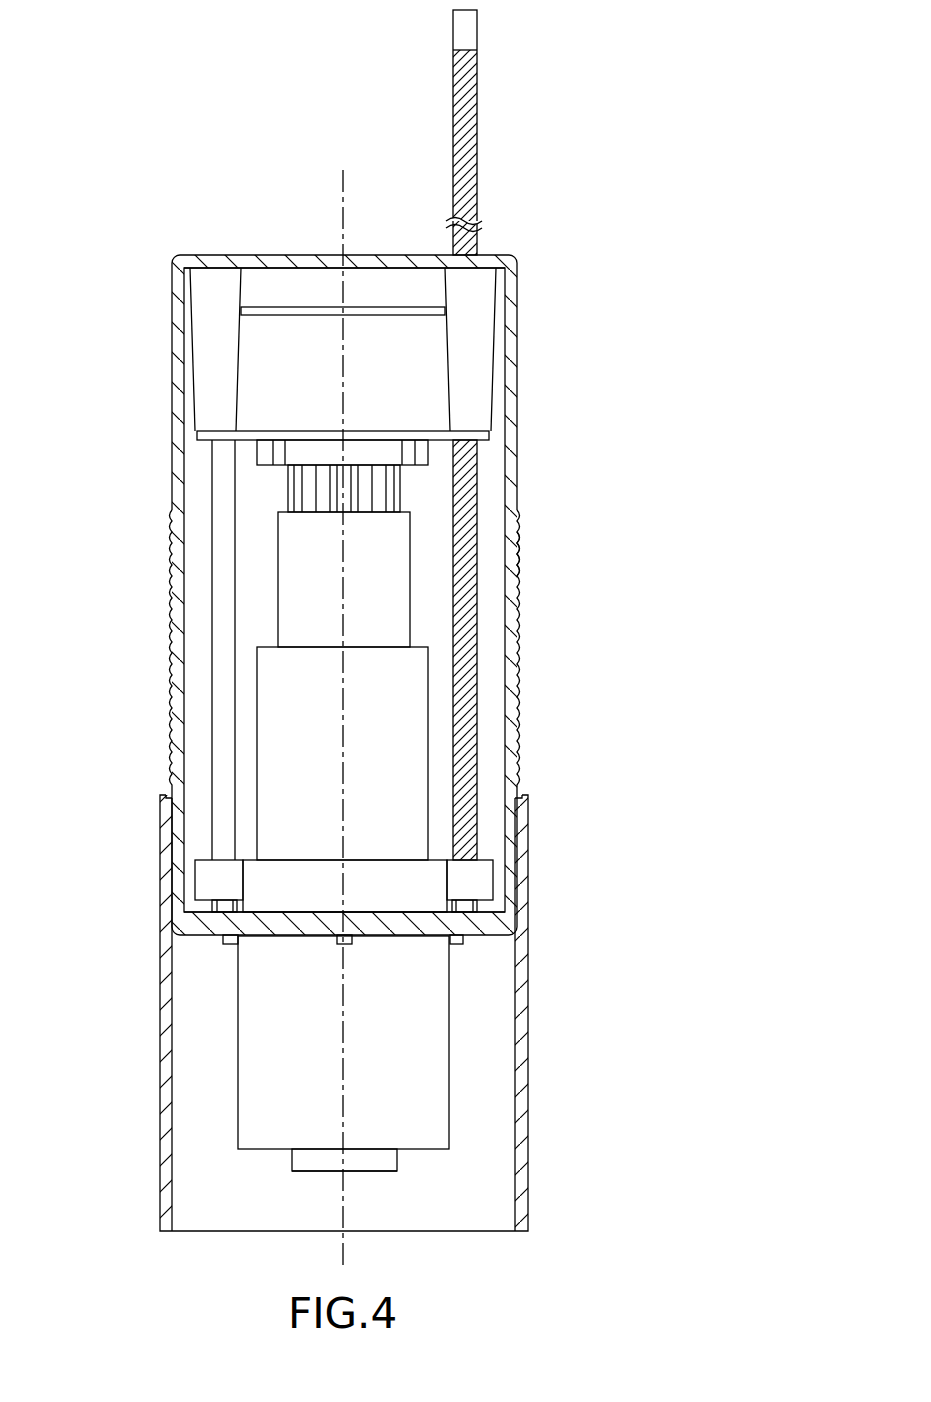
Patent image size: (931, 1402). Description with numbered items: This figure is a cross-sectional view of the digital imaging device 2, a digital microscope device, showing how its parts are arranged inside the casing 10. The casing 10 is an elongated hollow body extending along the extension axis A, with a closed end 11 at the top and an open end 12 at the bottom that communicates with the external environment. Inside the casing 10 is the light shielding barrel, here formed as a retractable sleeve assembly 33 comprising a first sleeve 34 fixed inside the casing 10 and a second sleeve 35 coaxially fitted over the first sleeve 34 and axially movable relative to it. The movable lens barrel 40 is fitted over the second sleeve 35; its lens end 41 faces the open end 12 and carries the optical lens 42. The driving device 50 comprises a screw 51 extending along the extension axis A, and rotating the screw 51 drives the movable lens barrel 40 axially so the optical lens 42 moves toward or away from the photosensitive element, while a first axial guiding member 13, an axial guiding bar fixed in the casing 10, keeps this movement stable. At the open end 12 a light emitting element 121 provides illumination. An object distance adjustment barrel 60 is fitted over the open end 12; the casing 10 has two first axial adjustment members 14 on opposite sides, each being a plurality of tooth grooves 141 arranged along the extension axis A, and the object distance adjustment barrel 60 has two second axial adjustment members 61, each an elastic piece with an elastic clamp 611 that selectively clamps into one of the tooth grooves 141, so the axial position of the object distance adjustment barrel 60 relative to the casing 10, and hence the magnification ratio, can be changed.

The digital imaging device 2 is at (160, 212).
The casing 10 is at (359, 581).
The closed end 11 is at (263, 255).
The open end 12 is at (478, 920).
The light emitting element 121 is at (458, 945).
The first axial guiding member 13 is at (220, 682).
The first axial adjustment member 14 is at (155, 623).
The tooth grooves 141 is at (520, 543).
The retractable sleeve assembly 33 is at (268, 570).
The first sleeve 34 is at (278, 600).
The second sleeve 35 is at (258, 770).
The movable lens barrel 40 is at (450, 1043).
The lens end 41 is at (425, 1150).
The optical lens 42 is at (352, 1171).
The driving device 50 is at (516, 435).
The screw 51 is at (475, 745).
The object distance adjustment barrel 60 is at (343, 1006).
The second axial adjustment member 61 is at (170, 826).
The elastic clamp 611 is at (160, 801).
The extension axis A is at (343, 1055).